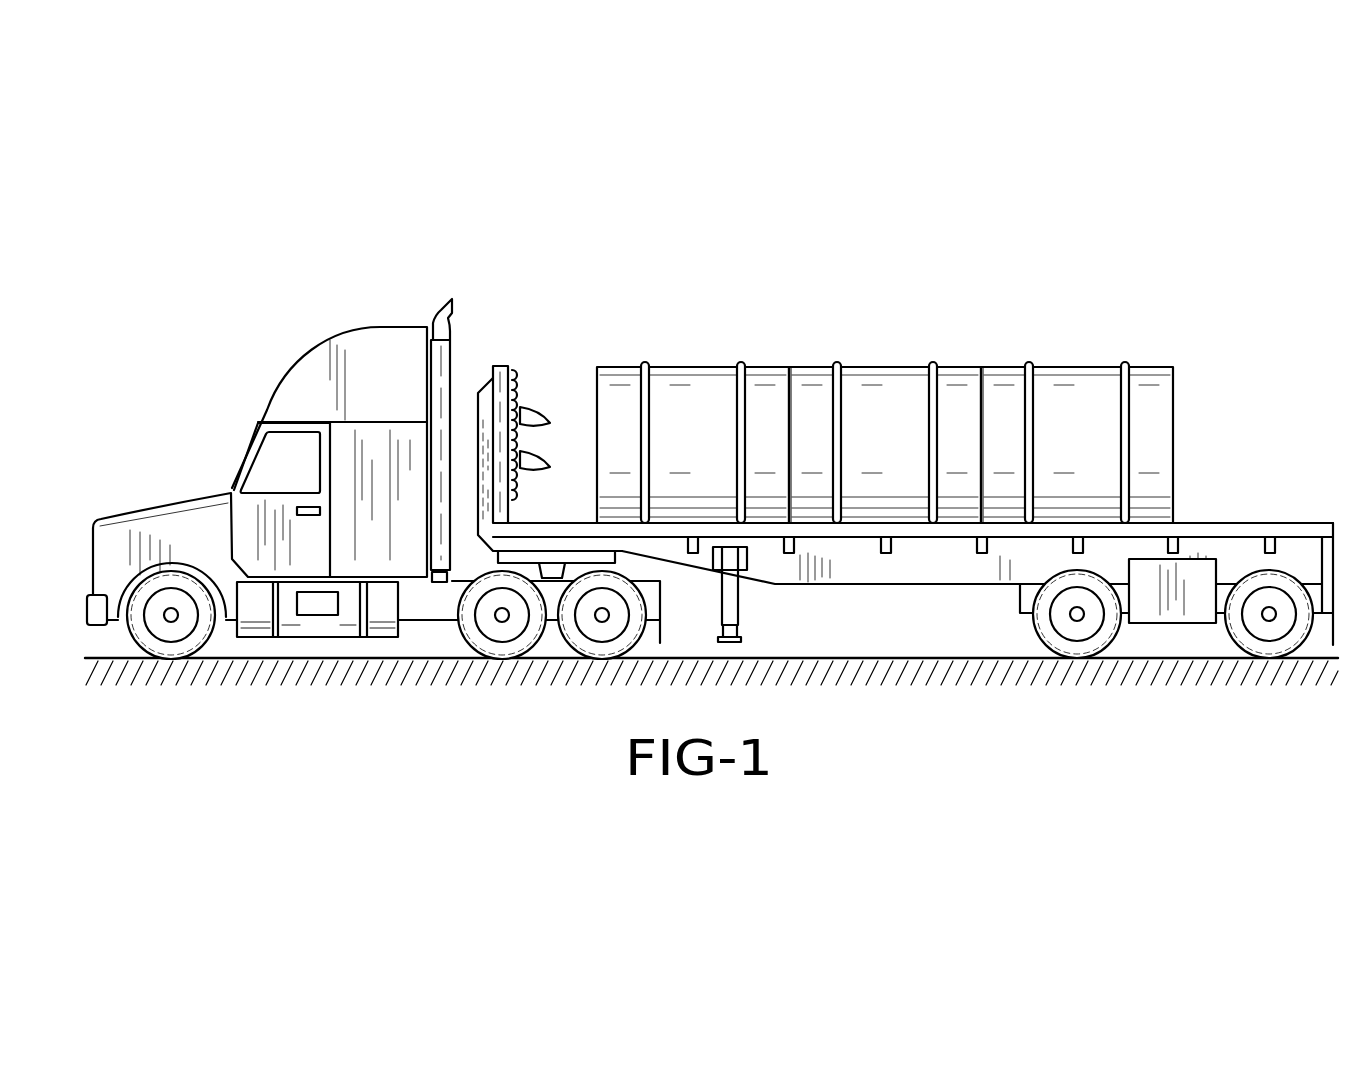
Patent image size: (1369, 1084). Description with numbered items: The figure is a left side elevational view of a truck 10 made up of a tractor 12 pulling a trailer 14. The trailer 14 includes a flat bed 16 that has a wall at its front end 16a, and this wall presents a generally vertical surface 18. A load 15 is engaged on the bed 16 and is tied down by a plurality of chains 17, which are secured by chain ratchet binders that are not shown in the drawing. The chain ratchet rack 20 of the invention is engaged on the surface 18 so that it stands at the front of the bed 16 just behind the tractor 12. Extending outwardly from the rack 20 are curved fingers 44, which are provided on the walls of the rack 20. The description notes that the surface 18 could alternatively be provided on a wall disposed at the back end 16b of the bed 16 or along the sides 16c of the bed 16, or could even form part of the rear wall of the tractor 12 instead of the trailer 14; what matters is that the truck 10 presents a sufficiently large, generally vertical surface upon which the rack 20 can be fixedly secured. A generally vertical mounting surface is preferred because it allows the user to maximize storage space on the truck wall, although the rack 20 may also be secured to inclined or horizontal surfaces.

The truck 10 is at (312, 323).
The tractor 12 is at (277, 388).
The trailer 14 is at (797, 588).
The load 15 is at (703, 366).
The flat bed 16 is at (1202, 522).
The front end 16a is at (482, 350).
The back end 16b is at (1318, 468).
The sides 16c is at (948, 547).
The chains 17 is at (650, 413).
The generally vertical surface 18 is at (498, 366).
The chain ratchet rack 20 is at (535, 378).
The curved fingers 44 is at (550, 465).